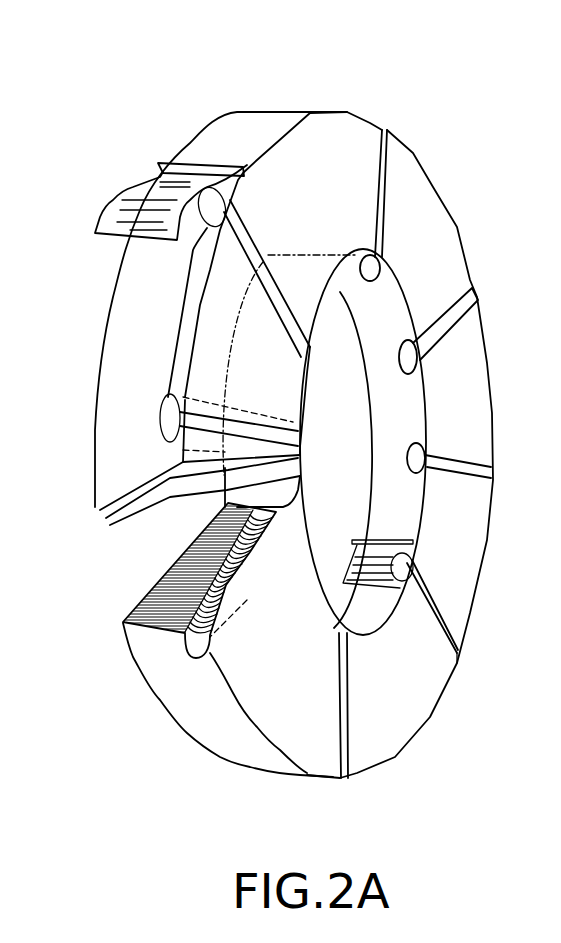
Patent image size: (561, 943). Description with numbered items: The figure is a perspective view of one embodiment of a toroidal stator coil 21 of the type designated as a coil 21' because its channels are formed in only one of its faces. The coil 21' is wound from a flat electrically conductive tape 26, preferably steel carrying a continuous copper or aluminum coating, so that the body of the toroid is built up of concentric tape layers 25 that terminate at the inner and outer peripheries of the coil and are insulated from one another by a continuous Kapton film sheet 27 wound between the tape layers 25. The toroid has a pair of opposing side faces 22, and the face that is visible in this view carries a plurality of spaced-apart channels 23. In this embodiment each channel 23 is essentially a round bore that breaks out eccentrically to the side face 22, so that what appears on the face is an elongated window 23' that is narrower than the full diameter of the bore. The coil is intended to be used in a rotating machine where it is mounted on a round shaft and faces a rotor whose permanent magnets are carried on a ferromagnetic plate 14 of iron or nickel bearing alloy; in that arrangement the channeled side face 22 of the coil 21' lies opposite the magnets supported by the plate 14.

The plate 14 is at (373, 523).
The coil 21 is at (364, 549).
The coil with channels on one face 21' is at (217, 742).
The side face 22 is at (388, 693).
The channel 23 is at (222, 315).
The elongated window 23' is at (392, 358).
The tape layer 25 is at (226, 505).
The electrically conductive tape 26 is at (178, 160).
The film sheet 27 is at (108, 215).